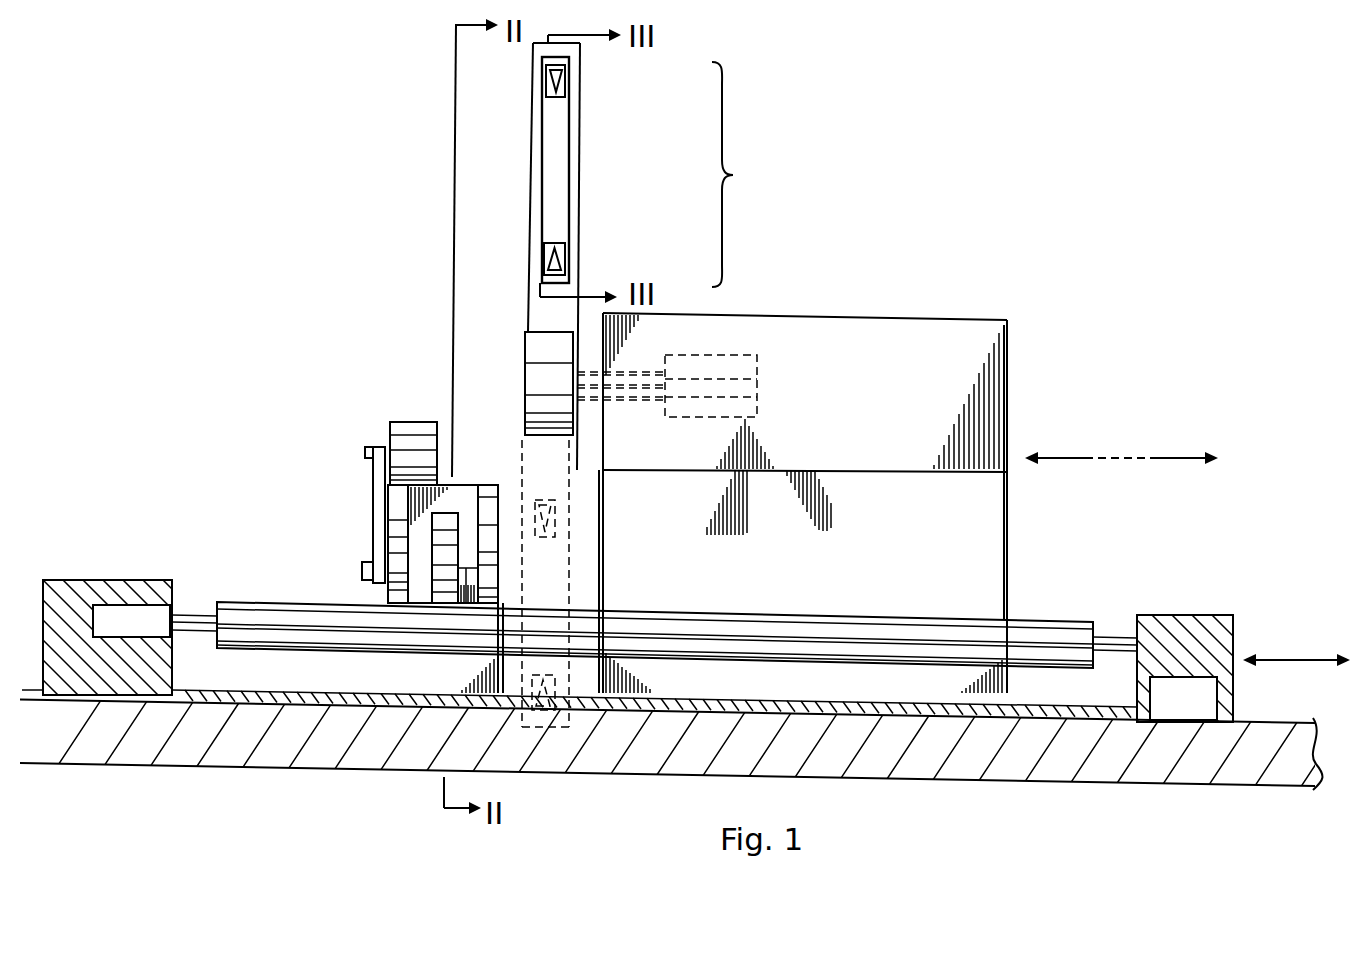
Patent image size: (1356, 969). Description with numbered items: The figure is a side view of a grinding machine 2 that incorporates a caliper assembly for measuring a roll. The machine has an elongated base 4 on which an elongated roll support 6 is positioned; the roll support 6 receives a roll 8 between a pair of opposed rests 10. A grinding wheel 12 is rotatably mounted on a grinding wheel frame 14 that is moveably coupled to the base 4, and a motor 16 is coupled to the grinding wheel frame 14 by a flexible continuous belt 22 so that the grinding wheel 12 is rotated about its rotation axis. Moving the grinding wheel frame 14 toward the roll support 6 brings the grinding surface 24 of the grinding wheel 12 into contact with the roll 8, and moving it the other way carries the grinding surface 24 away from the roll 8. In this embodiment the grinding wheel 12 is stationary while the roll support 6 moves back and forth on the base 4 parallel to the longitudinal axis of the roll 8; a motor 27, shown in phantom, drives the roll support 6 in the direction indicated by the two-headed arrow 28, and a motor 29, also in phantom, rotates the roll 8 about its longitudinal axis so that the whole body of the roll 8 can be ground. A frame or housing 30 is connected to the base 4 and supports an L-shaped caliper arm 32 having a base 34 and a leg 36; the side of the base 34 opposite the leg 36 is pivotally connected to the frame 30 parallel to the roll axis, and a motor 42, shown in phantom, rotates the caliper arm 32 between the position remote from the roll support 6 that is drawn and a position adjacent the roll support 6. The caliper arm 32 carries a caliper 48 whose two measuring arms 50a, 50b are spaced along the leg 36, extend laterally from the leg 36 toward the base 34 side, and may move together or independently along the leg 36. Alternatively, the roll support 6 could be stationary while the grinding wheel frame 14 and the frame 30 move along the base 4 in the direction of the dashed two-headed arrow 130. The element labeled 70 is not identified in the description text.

The grinding machine 2 is at (1058, 261).
The elongated base 4 is at (1118, 767).
The elongated roll support 6 is at (1253, 629).
The roll 8 is at (1045, 622).
The opposed rests 10 is at (70, 580).
The grinding wheel 12 is at (431, 530).
The grinding wheel frame 14 is at (470, 486).
The motor 16 is at (431, 422).
The flexible continuous belt 22 is at (372, 487).
The grinding surface 24 is at (500, 567).
The motor 27 is at (1233, 705).
The two-headed arrow 28 is at (1292, 655).
The motor 29 is at (117, 605).
The frame or housing 30 is at (895, 320).
The L-shaped caliper arm 32 is at (516, 133).
The base 34 is at (525, 387).
The leg 36 is at (530, 262).
The motor 42 is at (717, 353).
The caliper 48 is at (665, 174).
The measuring arm 50a is at (598, 261).
The measuring arm 50b is at (598, 75).
The indicator 70 is at (565, 87).
The dashed two-headed arrow 130 is at (1183, 418).